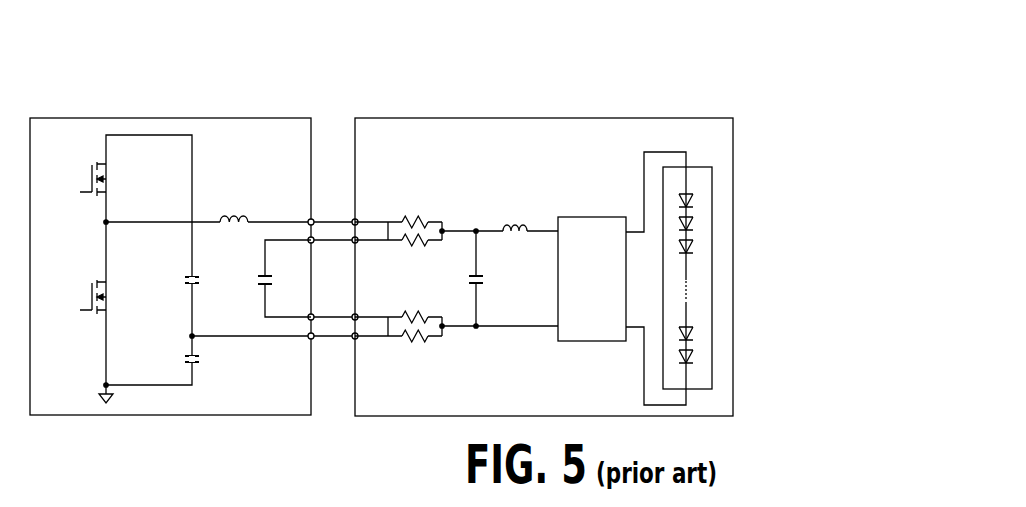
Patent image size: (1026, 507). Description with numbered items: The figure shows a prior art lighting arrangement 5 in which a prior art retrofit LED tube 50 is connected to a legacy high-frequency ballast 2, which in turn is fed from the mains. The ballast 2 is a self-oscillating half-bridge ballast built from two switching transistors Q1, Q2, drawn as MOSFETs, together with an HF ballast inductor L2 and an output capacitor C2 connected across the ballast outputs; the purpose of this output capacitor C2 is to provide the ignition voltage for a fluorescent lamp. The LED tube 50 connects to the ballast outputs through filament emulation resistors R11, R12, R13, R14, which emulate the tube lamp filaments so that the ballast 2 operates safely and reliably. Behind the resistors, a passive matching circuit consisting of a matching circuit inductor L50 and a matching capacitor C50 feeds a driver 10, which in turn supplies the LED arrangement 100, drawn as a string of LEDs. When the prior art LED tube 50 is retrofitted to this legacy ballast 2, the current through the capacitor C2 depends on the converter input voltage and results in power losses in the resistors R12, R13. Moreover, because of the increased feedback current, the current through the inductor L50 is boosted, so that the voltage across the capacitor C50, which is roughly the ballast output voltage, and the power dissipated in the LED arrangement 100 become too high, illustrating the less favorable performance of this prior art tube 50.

The prior art lighting arrangement 5 is at (636, 104).
The HF ballast 2 is at (180, 118).
The prior art retrofit LED tube 50 is at (513, 118).
The driver 10 is at (585, 217).
The LED arrangement 100 is at (669, 167).
The first switch transistor Q1 is at (90, 177).
The second switch transistor Q2 is at (90, 301).
The HF ballast inductor L2 is at (234, 201).
The HF ballast capacitor C2 is at (284, 278).
The filament emulation resistor R11 is at (411, 207).
The filament emulation resistor R12 is at (411, 255).
The filament emulation resistor R13 is at (411, 300).
The filament emulation resistor R14 is at (411, 355).
The matching circuit inductor L50 is at (508, 210).
The matching capacitor C50 is at (495, 278).